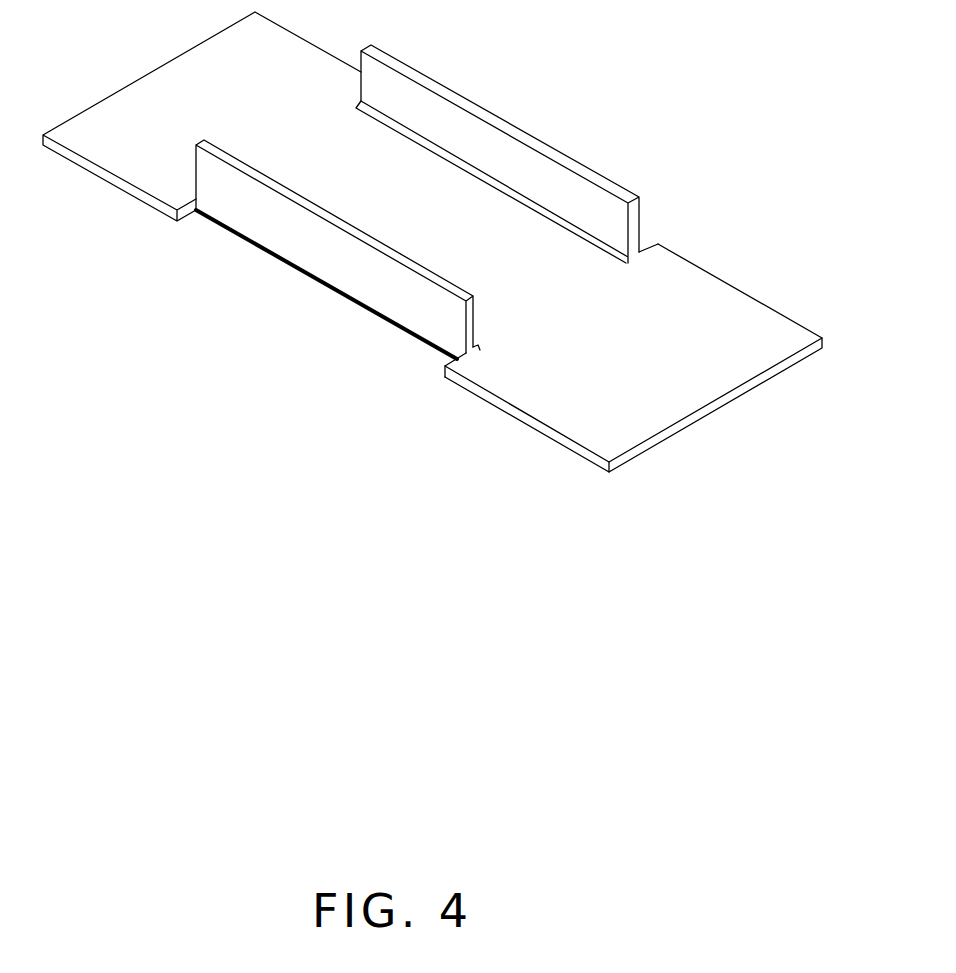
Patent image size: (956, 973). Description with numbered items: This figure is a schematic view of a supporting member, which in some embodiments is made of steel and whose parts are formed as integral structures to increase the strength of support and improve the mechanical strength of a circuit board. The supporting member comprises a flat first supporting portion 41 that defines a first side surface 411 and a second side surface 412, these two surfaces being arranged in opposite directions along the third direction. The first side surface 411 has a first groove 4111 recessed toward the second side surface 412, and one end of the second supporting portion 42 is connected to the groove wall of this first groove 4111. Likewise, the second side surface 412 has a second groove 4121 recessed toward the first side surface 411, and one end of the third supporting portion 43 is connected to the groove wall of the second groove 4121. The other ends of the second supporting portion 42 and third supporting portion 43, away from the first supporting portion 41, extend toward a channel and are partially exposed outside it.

The first supporting portion 41 is at (713, 377).
The first side surface 411 is at (740, 290).
The second side surface 412 is at (532, 420).
The first groove 4111 is at (647, 238).
The second groove 4121 is at (328, 298).
The second supporting portion 42 is at (445, 115).
The third supporting portion 43 is at (260, 215).